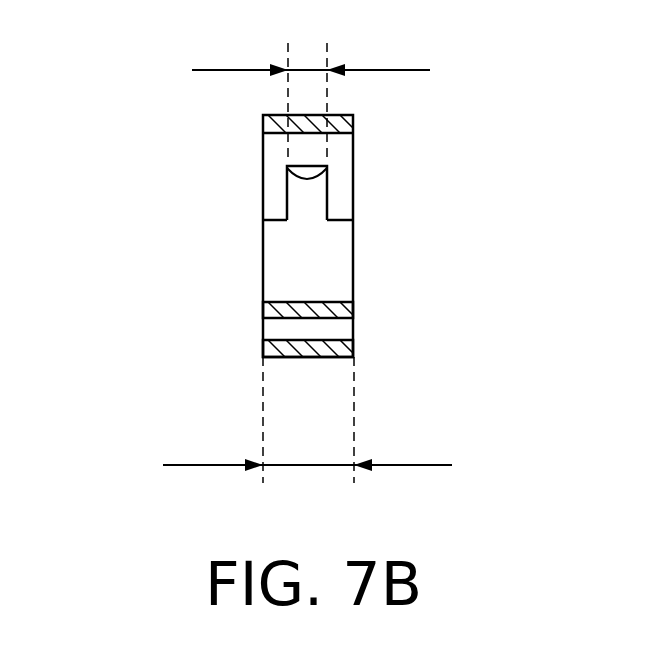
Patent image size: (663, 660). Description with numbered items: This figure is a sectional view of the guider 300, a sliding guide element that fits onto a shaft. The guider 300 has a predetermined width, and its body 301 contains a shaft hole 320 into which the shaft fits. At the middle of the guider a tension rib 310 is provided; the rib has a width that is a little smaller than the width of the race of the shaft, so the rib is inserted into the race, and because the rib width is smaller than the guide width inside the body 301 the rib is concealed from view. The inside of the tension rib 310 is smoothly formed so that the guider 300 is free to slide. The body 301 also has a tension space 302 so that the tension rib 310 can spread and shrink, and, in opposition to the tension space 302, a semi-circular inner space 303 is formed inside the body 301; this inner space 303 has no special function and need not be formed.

The guider 300 is at (185, 152).
The body 301 is at (263, 350).
The tension space 302 is at (345, 145).
The semi-circular inner space 303 is at (345, 327).
The tension rib 310 is at (315, 172).
The shaft hole 320 is at (270, 268).